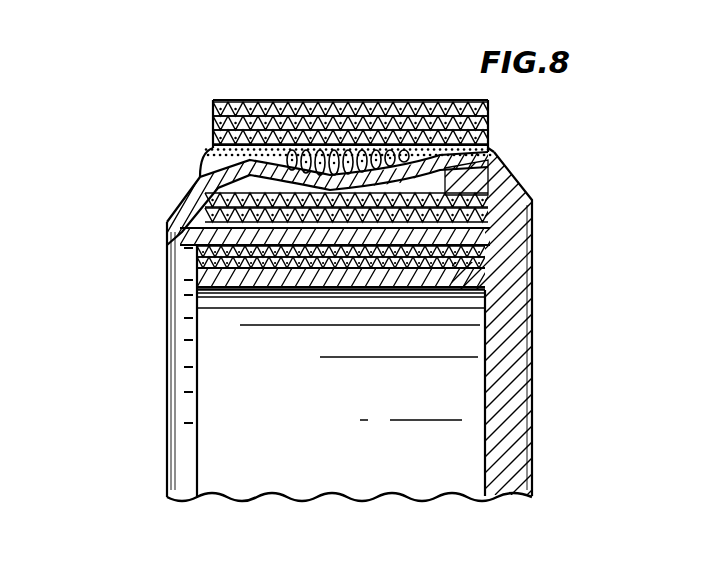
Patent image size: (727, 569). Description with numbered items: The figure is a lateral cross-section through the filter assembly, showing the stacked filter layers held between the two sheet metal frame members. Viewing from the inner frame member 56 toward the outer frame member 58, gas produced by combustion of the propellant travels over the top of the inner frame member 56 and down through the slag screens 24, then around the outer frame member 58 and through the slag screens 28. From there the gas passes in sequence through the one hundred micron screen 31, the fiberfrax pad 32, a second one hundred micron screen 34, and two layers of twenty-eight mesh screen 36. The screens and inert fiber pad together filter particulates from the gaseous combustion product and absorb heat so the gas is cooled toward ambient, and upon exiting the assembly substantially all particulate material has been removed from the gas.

The 28 mesh screen 36 is at (487, 123).
The second 100 micron screen 34 is at (212, 140).
The 100 micron screen 31 is at (217, 167).
The slag screens 28 is at (190, 215).
The fiberfrax pad 32 is at (490, 152).
The slag screens 24 is at (455, 262).
The outer frame member 58 is at (465, 332).
The inner frame member 56 is at (192, 320).